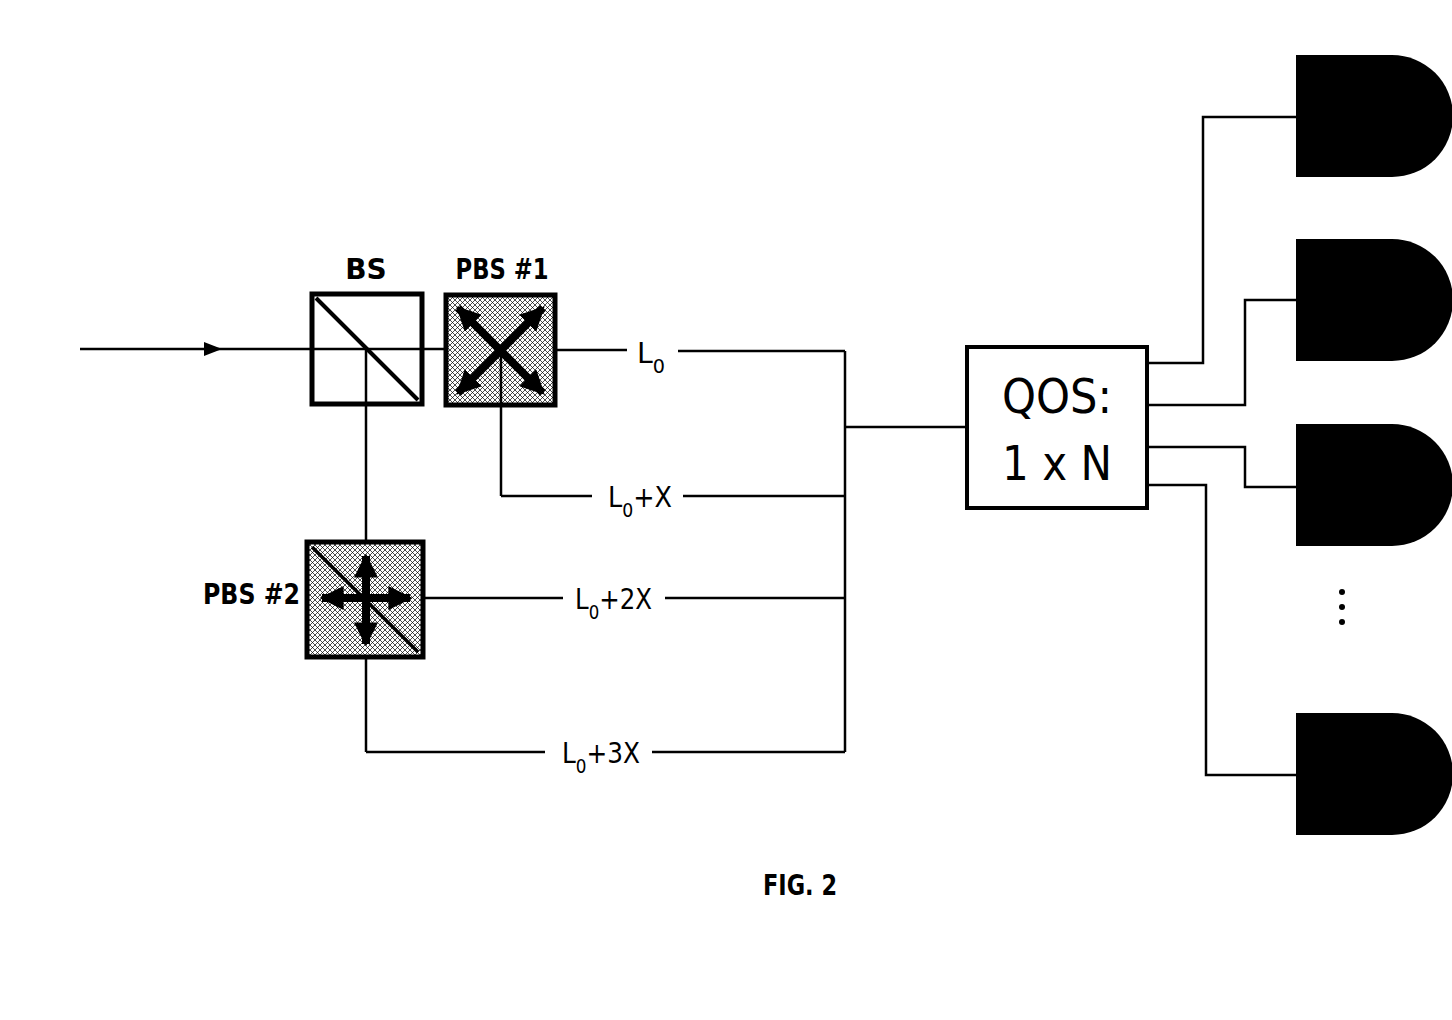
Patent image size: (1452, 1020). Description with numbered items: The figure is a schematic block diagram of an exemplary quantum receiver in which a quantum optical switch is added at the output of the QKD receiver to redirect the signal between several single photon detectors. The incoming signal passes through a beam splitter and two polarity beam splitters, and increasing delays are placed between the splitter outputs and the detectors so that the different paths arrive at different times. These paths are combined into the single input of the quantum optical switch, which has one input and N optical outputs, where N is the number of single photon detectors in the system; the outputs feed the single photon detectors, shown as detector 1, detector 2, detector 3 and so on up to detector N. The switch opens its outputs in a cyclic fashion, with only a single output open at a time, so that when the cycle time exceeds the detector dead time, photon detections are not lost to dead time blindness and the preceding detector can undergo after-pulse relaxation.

The single photon detector SPD # 1 is at (1299, 209).
The single photon detector SPD # 2 is at (1299, 322).
The single photon detector SPD # 3 is at (1299, 485).
The number of optical outputs / SPDs N is at (1299, 660).